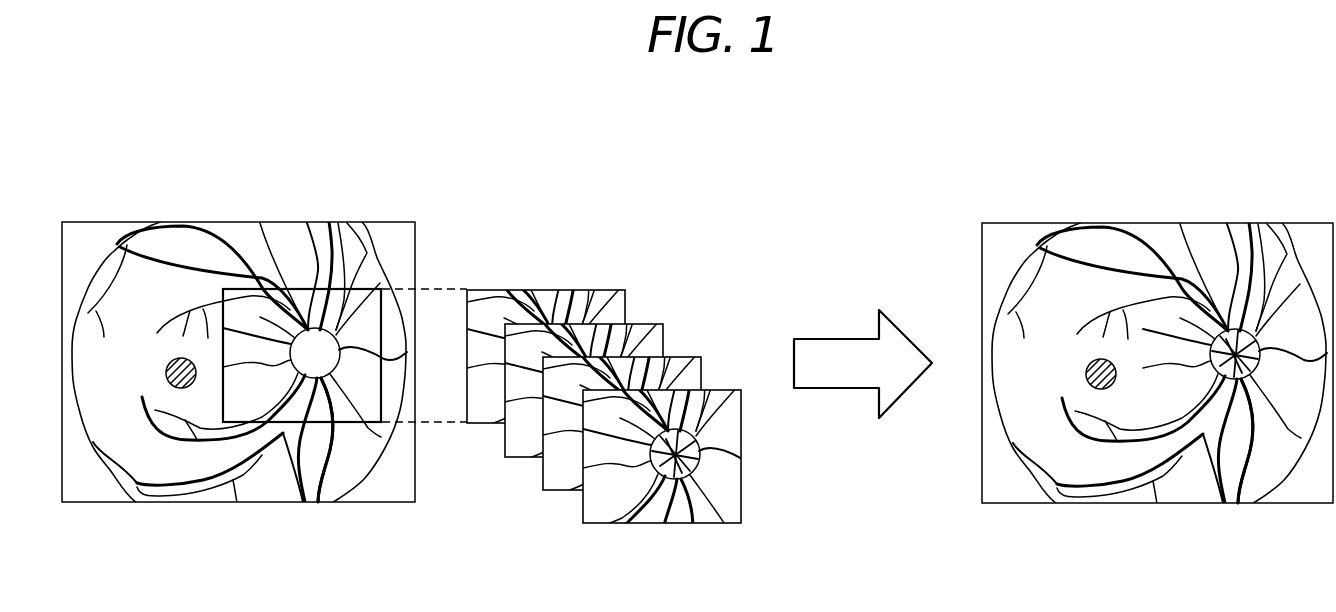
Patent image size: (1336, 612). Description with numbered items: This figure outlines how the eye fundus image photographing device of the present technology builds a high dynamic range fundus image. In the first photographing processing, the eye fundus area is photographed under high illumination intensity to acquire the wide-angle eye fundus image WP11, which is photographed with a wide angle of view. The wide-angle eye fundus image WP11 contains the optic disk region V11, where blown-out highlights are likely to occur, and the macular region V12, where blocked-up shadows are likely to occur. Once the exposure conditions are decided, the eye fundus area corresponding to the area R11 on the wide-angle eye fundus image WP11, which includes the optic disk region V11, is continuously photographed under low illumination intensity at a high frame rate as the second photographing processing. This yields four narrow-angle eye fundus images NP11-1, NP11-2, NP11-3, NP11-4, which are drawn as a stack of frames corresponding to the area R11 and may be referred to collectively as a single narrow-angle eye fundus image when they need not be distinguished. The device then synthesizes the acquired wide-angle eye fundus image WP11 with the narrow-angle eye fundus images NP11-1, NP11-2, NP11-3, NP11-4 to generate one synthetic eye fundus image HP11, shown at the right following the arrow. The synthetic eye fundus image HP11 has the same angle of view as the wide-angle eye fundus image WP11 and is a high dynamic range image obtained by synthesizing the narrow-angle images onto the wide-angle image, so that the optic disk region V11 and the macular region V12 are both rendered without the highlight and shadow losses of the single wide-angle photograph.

The wide-angle eye fundus image WP11 is at (114, 222).
The area R11 is at (307, 222).
The macular region V12 is at (173, 388).
The optic disk region V11 is at (318, 502).
The narrow-angle eye fundus image NP11-1 is at (563, 290).
The narrow-angle eye fundus image NP11-2 is at (650, 324).
The narrow-angle eye fundus image NP11-3 is at (688, 357).
The narrow-angle eye fundus image NP11-4 is at (741, 450).
The synthetic eye fundus image HP11 is at (1158, 223).